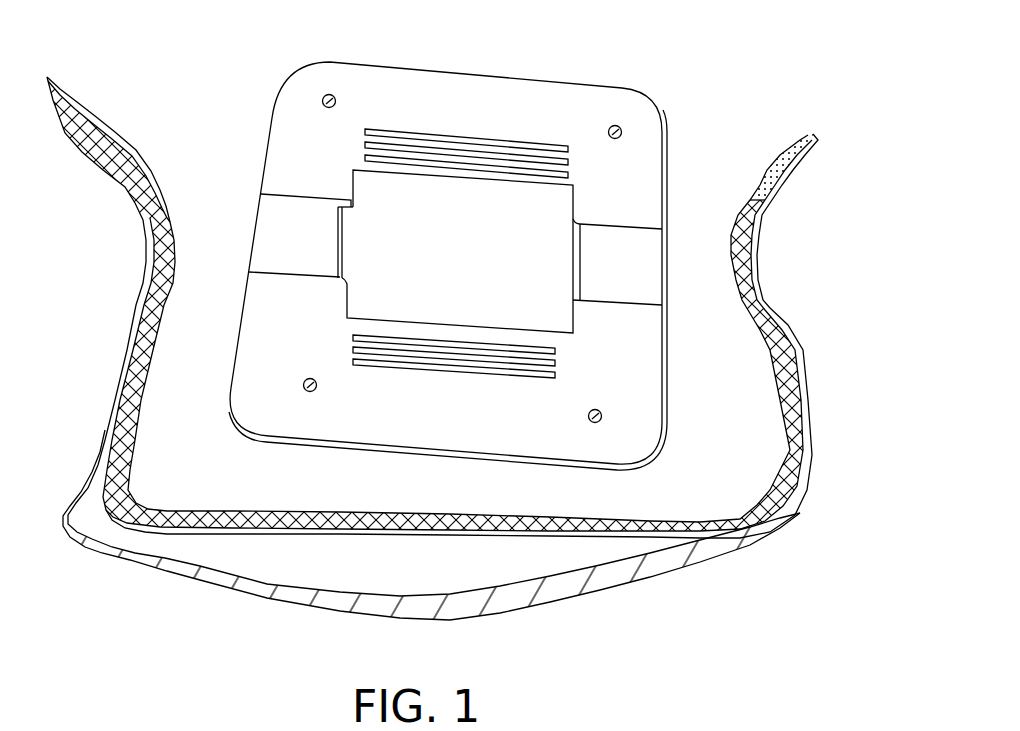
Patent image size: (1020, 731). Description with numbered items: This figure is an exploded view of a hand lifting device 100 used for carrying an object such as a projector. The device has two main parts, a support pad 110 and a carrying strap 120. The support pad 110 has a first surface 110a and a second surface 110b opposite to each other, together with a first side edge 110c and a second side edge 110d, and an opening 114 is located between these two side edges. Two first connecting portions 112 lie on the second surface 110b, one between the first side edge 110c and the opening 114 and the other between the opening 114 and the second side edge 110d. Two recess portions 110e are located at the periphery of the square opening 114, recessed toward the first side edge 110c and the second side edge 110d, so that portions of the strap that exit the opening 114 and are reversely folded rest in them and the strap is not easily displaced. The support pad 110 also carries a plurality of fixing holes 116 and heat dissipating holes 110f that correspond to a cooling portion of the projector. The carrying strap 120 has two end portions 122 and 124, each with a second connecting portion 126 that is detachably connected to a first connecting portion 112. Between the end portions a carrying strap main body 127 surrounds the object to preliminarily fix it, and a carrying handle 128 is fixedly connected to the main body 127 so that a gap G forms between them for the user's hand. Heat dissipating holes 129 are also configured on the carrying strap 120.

The hand lifting device 100 is at (788, 40).
The support pad 110 is at (459, 96).
The first surface 110a is at (666, 146).
The second surface 110b is at (589, 110).
The first side edge 110c is at (262, 126).
The second side edge 110d is at (666, 360).
The recess portions 110e is at (575, 263).
The heat dissipating holes 110f is at (380, 127).
The first connecting portions 112 is at (633, 257).
The opening 114 is at (500, 206).
The fixing holes 116 is at (620, 128).
The carrying strap 120 is at (809, 450).
The end portion 122 is at (144, 188).
The end portion 124 is at (757, 227).
The second connecting portion 126 is at (789, 167).
The carrying strap main body 127 is at (602, 514).
The carrying handle 128 is at (597, 587).
The heat dissipating holes 129 is at (170, 299).
The gap G is at (386, 540).